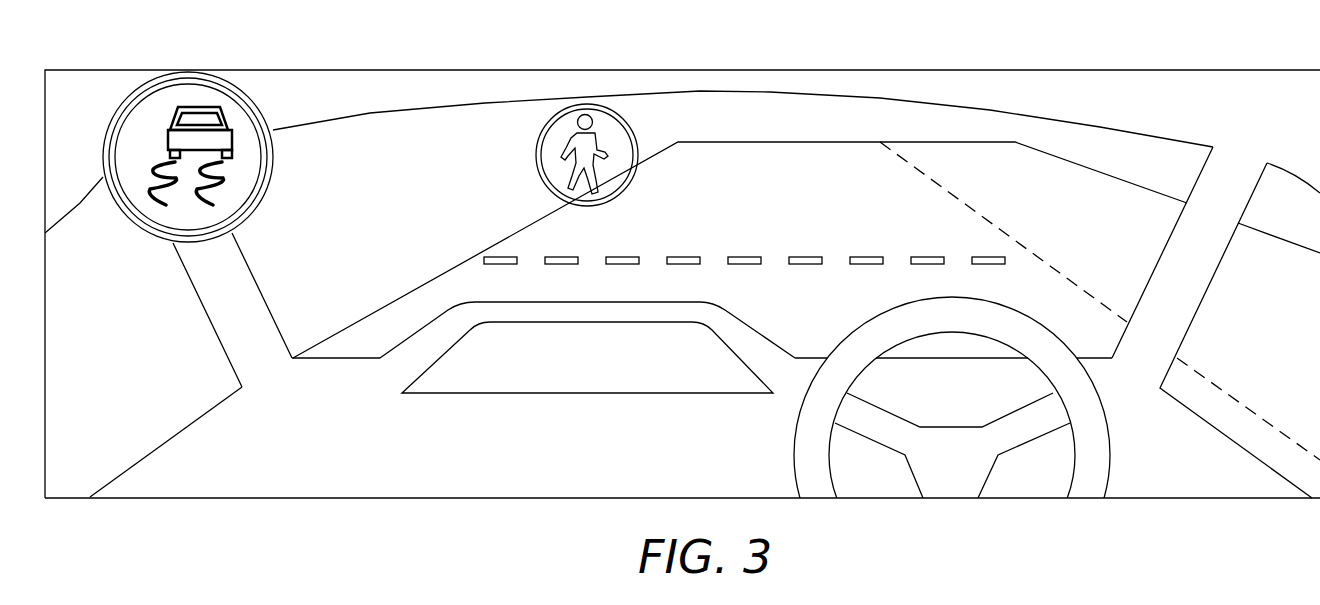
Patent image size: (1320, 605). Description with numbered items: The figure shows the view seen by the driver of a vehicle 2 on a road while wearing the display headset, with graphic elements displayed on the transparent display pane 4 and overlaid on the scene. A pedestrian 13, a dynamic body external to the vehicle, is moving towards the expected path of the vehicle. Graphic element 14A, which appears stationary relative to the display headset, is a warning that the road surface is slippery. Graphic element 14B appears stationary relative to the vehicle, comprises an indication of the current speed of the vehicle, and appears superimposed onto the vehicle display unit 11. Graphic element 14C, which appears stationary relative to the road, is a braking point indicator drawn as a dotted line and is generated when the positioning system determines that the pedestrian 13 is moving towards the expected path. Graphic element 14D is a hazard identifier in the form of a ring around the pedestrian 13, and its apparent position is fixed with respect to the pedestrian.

The vehicle 2 is at (250, 307).
The transparent display pane 4 is at (892, 500).
The vehicle display unit 11 is at (708, 395).
The pedestrian 13 is at (567, 160).
The graphic element 14A is at (273, 157).
The graphic element 14B is at (558, 372).
The graphic element 14C is at (866, 257).
The graphic element 14D is at (597, 104).